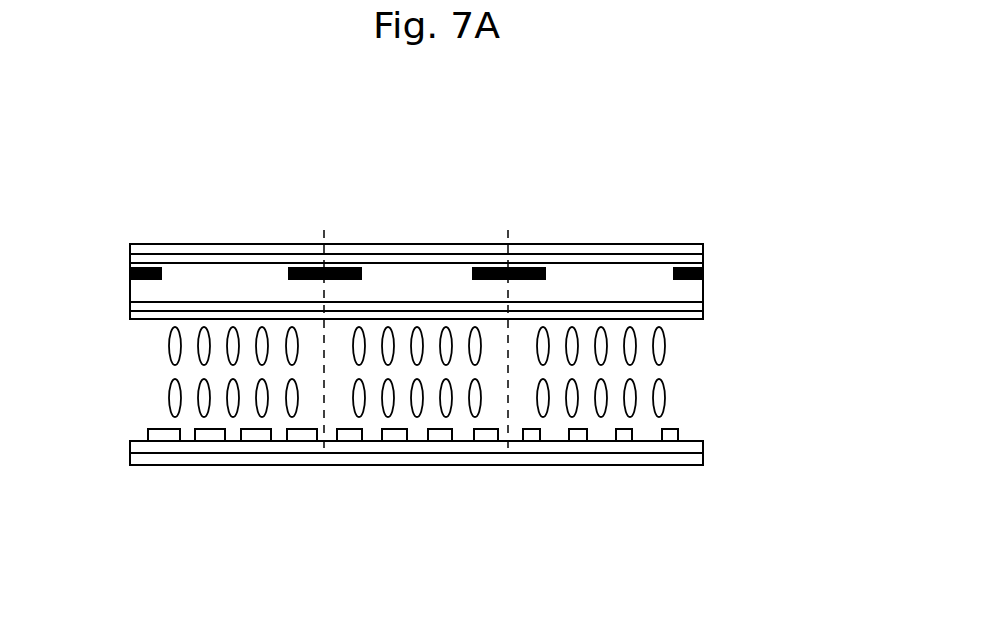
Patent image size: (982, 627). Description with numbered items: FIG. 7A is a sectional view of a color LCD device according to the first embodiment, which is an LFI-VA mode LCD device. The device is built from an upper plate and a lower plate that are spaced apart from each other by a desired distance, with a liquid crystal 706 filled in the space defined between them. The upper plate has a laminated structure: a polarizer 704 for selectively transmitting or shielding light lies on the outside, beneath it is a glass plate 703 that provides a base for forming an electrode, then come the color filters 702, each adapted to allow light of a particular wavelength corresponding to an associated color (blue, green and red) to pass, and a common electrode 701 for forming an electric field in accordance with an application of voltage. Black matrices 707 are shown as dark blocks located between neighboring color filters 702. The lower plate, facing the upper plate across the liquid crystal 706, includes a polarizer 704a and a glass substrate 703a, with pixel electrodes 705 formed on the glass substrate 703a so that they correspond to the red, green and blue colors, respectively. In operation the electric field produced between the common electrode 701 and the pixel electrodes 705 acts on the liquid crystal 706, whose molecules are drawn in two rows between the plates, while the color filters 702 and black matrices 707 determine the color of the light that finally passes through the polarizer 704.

The common electrode 701 is at (138, 311).
The color filters 702 is at (700, 289).
The glass plate 703 is at (704, 258).
The glass substrate 703a is at (703, 450).
The polarizer 704 is at (704, 245).
The polarizer 704a is at (696, 464).
The pixel electrodes 705 is at (677, 437).
The liquid crystal 706 is at (662, 388).
The black matrices 707 is at (300, 266).